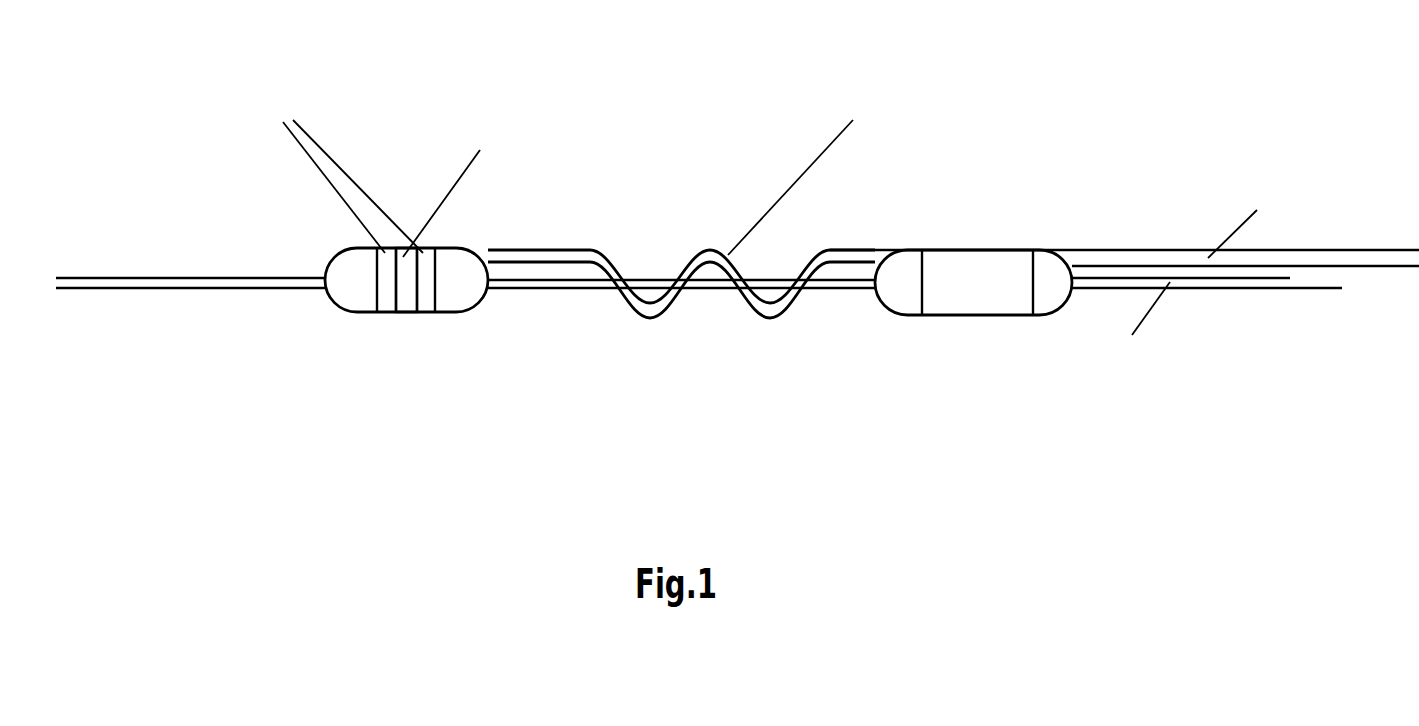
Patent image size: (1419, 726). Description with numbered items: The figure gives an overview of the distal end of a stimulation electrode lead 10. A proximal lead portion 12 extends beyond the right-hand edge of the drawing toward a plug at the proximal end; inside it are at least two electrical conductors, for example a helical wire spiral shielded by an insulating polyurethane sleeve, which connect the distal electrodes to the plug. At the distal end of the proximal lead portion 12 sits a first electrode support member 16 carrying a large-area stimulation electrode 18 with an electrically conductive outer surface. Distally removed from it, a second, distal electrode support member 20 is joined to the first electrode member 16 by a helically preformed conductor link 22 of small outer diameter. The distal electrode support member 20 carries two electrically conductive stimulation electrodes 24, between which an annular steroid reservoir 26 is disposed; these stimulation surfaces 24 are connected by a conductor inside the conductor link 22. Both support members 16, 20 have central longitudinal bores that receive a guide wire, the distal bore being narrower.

The stimulation electrode lead 10 is at (703, 150).
The proximal lead portion 12 is at (1117, 260).
The first electrode support member 16 is at (1047, 268).
The stimulation electrode 18 is at (957, 257).
The second, distal electrode support member 20 is at (463, 263).
The helically preformed conductor link 22 is at (707, 254).
The stimulation electrodes 24 is at (380, 315).
The steroid reservoir 26 is at (405, 316).